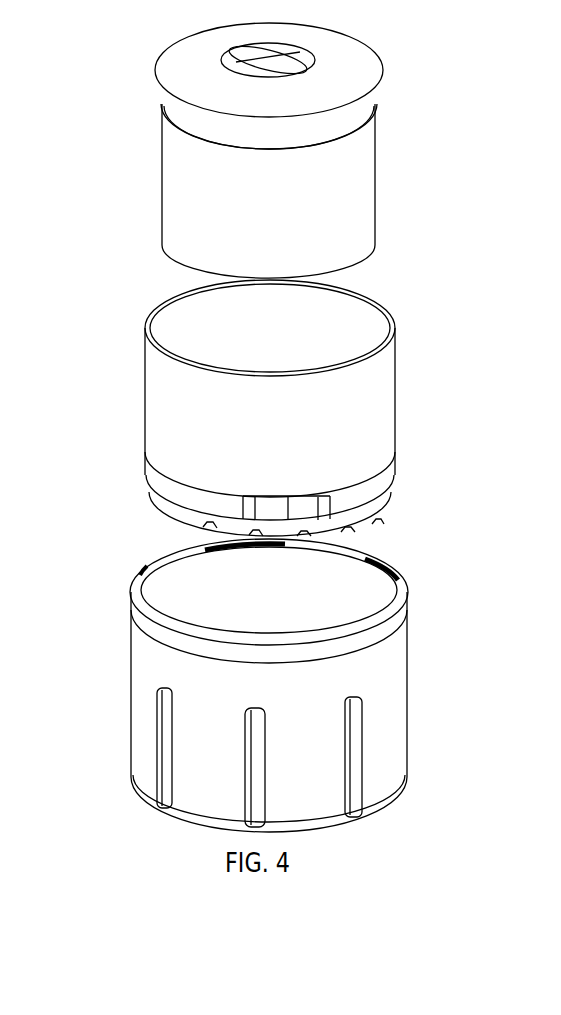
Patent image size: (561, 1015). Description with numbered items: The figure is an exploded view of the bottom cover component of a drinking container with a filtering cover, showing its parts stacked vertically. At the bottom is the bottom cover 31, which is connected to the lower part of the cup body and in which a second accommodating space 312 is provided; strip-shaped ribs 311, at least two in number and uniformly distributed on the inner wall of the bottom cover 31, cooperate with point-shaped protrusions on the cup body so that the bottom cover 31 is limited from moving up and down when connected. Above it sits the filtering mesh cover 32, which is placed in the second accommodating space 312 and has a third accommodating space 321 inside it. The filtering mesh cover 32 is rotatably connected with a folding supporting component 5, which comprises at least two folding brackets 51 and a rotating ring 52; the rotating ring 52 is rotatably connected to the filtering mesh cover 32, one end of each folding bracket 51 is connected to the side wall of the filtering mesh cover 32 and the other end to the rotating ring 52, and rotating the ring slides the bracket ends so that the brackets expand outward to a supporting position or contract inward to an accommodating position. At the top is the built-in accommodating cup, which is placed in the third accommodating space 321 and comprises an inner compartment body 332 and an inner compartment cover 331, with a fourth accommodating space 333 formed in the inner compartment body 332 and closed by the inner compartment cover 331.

The inner compartment cover 331 is at (333, 87).
The inner compartment body 332 is at (349, 203).
The fourth accommodating space 333 is at (218, 125).
The filtering mesh cover 32 is at (221, 388).
The third accommodating space 321 is at (235, 338).
The folding supporting component 5 is at (257, 486).
The folding bracket 51 is at (390, 468).
The rotating ring 52 is at (383, 507).
The bottom cover 31 is at (257, 683).
The strip-shaped ribs 311 is at (390, 564).
The second accommodating space 312 is at (305, 618).